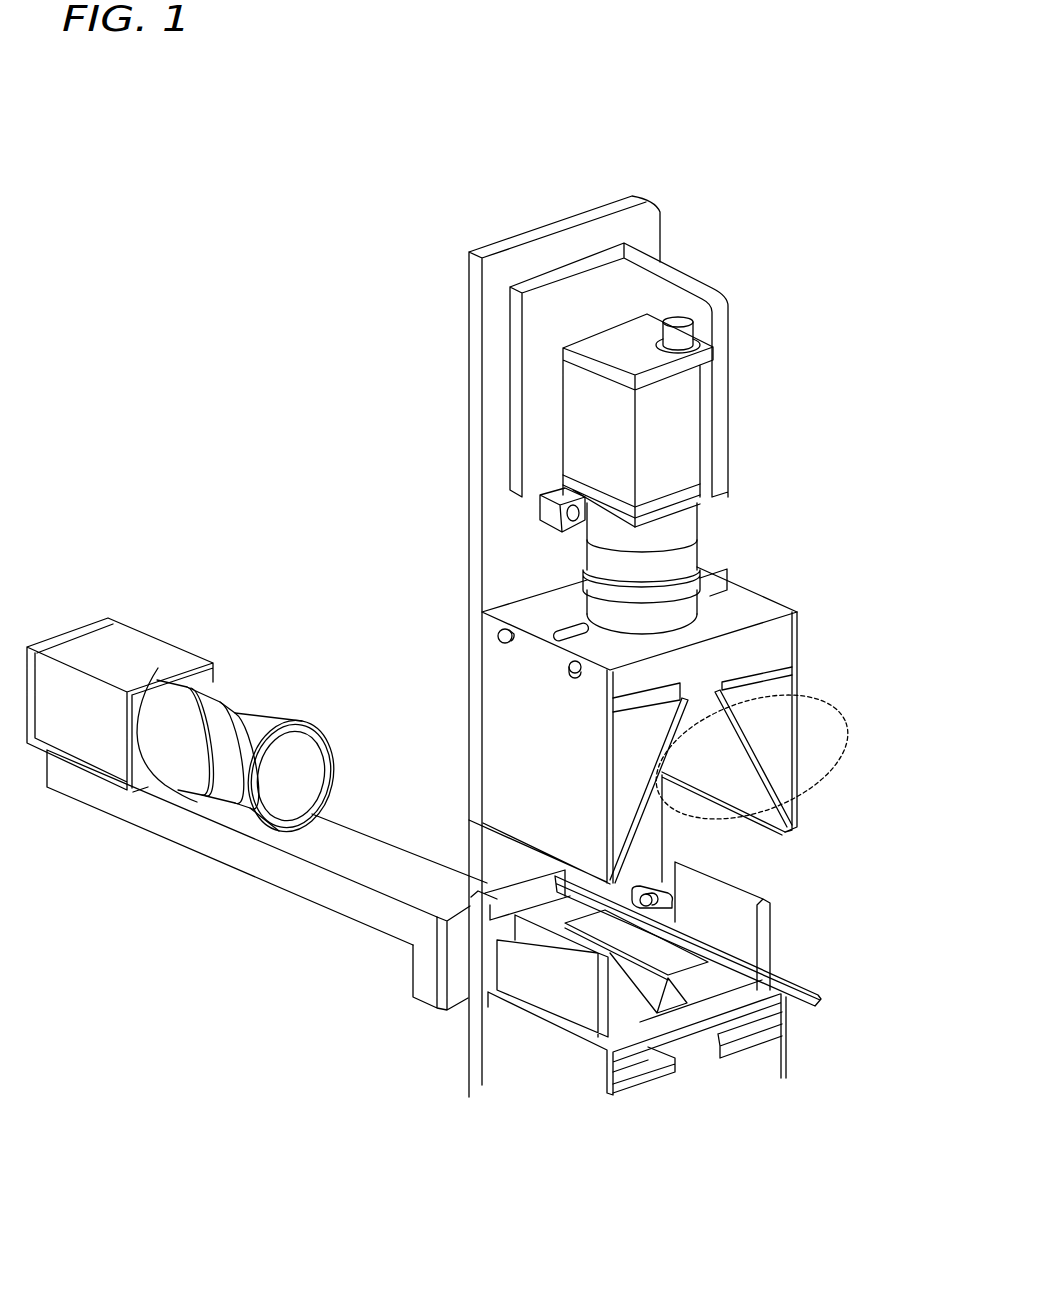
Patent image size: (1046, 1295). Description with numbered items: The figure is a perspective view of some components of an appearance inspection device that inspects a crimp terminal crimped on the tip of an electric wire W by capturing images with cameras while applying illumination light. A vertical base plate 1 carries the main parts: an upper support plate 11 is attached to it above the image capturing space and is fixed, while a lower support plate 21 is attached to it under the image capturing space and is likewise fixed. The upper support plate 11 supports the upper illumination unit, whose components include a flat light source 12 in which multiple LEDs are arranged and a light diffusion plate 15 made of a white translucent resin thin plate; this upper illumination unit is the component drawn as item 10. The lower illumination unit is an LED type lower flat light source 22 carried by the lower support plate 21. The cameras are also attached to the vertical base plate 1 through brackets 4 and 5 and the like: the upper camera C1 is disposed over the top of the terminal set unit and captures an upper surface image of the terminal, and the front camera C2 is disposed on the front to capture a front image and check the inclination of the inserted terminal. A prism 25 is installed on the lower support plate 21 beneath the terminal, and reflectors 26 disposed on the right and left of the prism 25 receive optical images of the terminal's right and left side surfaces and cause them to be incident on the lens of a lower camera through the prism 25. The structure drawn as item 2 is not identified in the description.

The vertical base plate 1 is at (660, 237).
The support bar 2 is at (497, 884).
The bracket 4 is at (728, 317).
The bracket 5 is at (290, 875).
The illumination unit 10 is at (768, 778).
The upper support plate 11 is at (762, 606).
The flat light source 12 is at (760, 660).
The light diffusion plate 15 is at (738, 722).
The lower support plate 21 is at (700, 1065).
The lower flat light source 22 is at (664, 1068).
The prism 25 is at (655, 1000).
The reflector 26 is at (748, 904).
The upper camera C1 is at (700, 418).
The front camera C2 is at (147, 655).
The electric wire W is at (795, 975).